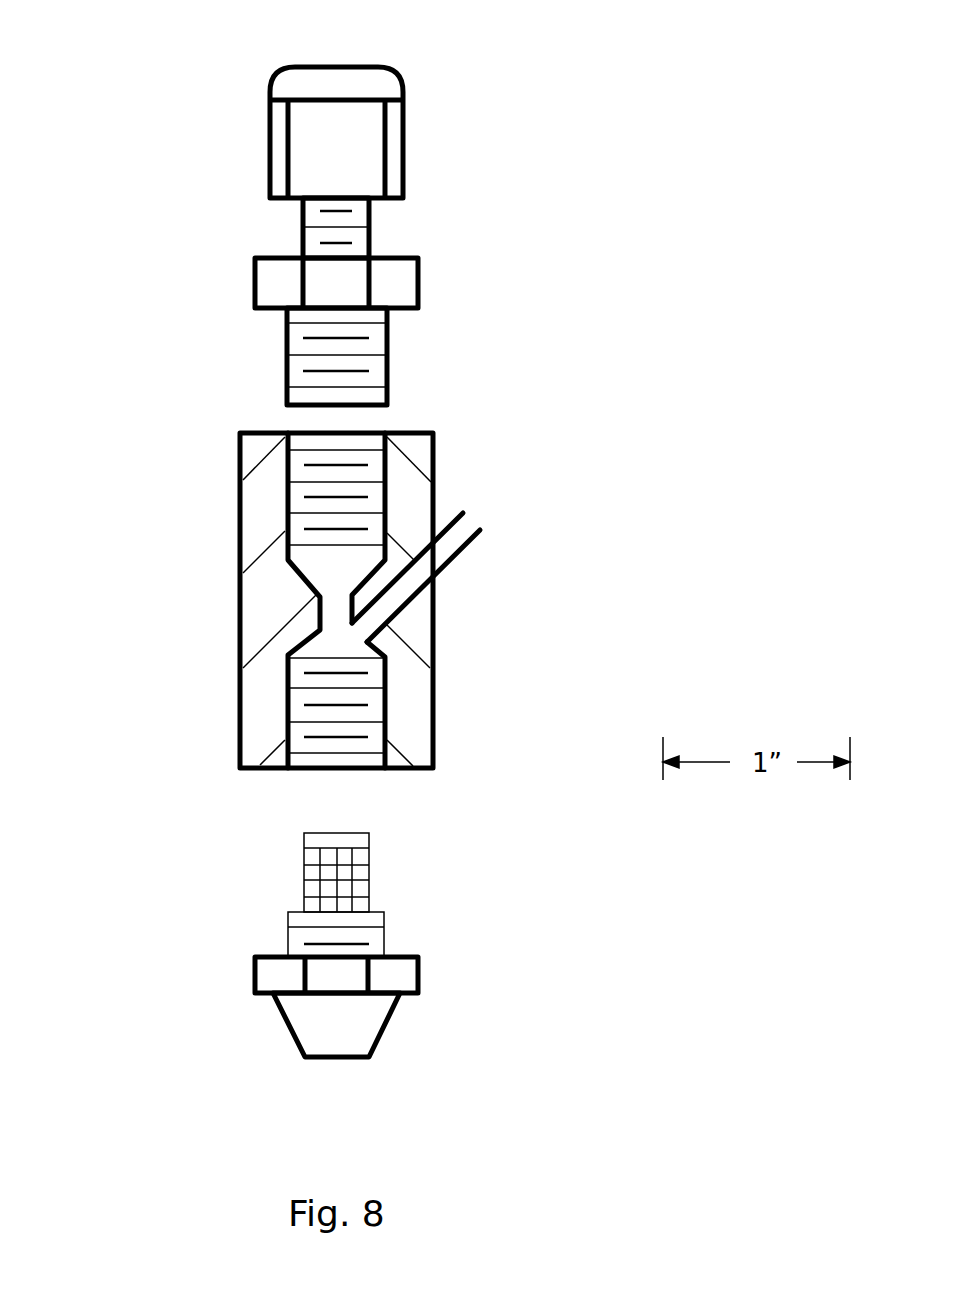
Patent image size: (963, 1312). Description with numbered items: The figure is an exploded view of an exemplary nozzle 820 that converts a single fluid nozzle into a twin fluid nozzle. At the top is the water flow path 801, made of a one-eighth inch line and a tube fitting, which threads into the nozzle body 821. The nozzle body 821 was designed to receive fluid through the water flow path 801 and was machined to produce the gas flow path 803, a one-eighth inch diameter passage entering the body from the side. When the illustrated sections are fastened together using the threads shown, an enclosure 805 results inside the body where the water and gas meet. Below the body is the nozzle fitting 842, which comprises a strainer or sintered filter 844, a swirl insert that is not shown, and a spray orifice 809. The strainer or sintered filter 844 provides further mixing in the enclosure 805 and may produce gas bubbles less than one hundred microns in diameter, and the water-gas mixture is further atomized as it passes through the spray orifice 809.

The water flow path 801 is at (323, 63).
The nozzle 820 is at (595, 217).
The nozzle body 821 is at (253, 520).
The enclosure 805 is at (335, 643).
The gas flow path 803 is at (458, 555).
The strainer or sintered filter 844 is at (330, 870).
The nozzle fitting 842 is at (505, 928).
The spray orifice 809 is at (338, 1058).